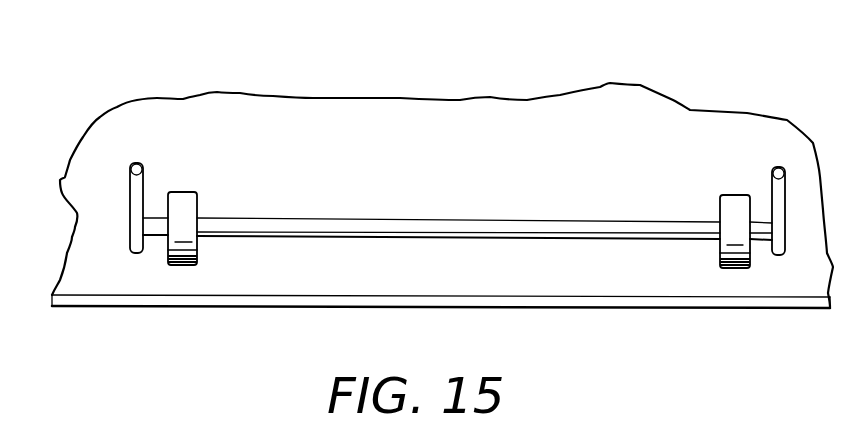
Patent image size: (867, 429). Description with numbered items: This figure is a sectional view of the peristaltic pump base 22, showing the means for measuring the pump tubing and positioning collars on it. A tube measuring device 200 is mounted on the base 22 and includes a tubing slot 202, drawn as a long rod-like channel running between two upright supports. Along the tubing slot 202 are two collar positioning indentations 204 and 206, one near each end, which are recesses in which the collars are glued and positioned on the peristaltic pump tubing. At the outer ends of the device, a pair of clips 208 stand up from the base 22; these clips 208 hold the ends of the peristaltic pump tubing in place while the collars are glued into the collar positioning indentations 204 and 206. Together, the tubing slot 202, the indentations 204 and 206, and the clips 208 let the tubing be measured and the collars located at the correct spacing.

The base 22 is at (92, 240).
The tube measuring device 200 is at (437, 140).
The tubing slot 202 is at (522, 227).
The collar positioning indentation 204 is at (187, 198).
The collar positioning indentation 206 is at (734, 200).
The clips 208 is at (145, 182).